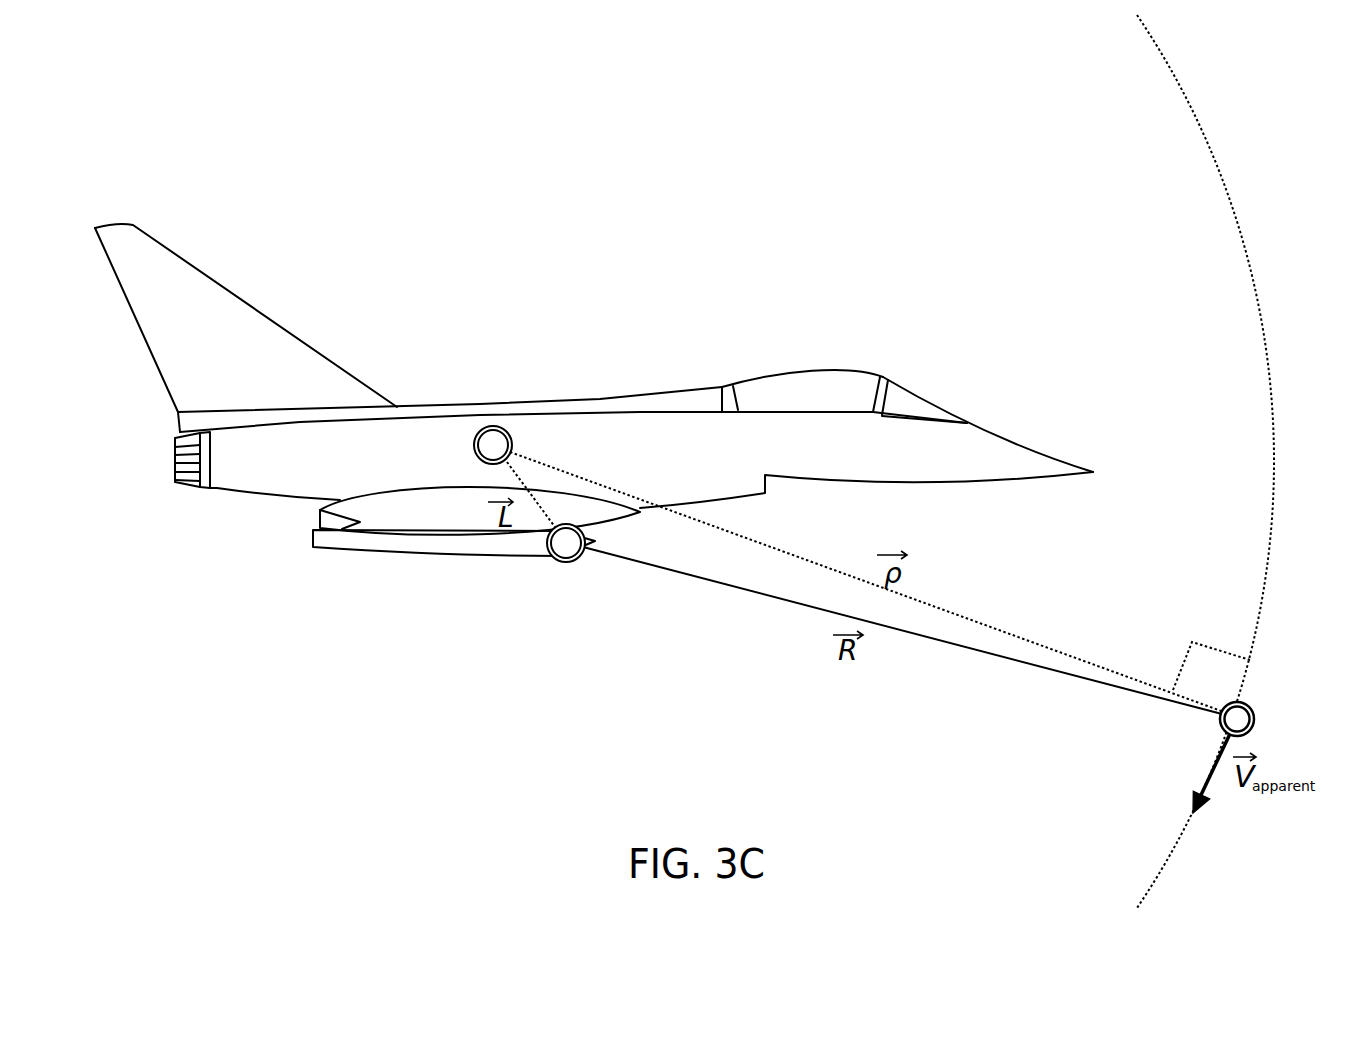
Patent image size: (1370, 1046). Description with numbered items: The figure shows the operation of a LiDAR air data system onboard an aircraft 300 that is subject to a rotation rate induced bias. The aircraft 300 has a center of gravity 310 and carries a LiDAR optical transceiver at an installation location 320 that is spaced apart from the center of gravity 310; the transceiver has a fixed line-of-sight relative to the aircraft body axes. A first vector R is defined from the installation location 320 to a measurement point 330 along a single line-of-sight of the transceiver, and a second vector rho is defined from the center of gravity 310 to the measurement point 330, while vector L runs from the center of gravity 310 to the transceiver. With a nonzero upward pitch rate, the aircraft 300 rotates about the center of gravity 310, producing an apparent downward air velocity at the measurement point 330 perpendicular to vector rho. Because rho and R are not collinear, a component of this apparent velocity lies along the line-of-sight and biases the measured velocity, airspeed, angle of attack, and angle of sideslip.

The aircraft 300 is at (729, 233).
The center of gravity 310 is at (494, 428).
The installation location 320 is at (560, 561).
The measurement point 330 is at (1255, 719).